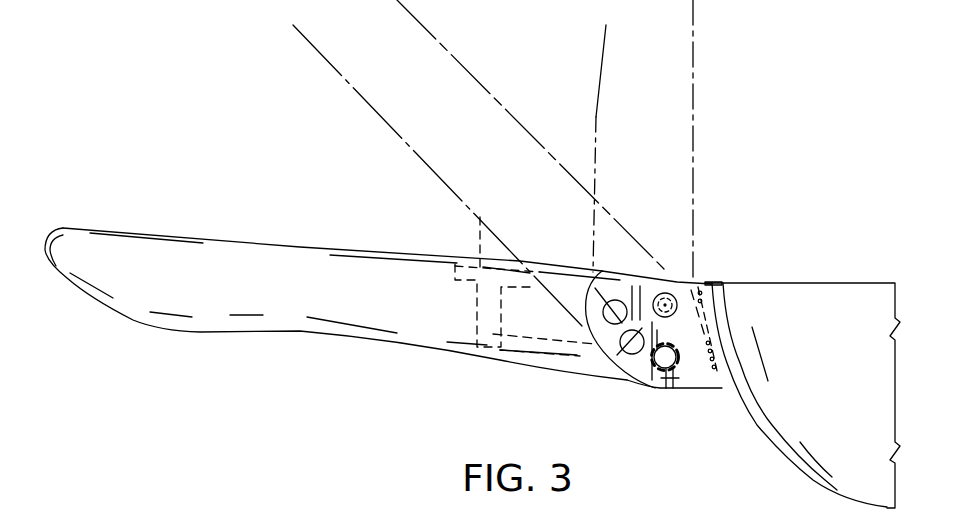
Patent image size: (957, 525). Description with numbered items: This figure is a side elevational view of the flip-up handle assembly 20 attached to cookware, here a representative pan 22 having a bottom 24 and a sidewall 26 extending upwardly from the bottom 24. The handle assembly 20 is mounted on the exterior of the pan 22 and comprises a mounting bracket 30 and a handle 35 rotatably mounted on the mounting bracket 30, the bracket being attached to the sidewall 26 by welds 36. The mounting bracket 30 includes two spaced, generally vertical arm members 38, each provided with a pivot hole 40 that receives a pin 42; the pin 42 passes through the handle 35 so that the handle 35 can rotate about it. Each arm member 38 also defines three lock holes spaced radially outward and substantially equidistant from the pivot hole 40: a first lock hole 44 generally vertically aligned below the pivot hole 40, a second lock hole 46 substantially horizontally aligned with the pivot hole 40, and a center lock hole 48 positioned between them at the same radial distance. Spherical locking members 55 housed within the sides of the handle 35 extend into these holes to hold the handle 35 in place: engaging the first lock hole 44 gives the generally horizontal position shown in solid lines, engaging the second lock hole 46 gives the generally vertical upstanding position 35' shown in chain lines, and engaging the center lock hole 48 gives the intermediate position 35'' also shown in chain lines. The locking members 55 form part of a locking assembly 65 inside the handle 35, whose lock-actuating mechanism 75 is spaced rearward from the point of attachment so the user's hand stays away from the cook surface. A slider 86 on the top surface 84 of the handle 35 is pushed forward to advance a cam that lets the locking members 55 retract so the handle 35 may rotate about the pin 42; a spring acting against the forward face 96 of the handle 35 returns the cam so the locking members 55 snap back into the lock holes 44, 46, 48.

The flip-up handle assembly 20 is at (329, 212).
The pan 22 is at (752, 458).
The bottom 24 is at (887, 503).
The sidewall 26 is at (738, 413).
The mounting bracket 30 is at (646, 401).
The handle 35 is at (336, 271).
The upstanding handle position 35' is at (690, 140).
The intermediate handle position 35'' is at (480, 163).
The welds 36 is at (712, 287).
The arm members 38 is at (627, 299).
The pivot hole 40 is at (668, 283).
The pin 42 is at (677, 308).
The first lock hole 44 is at (676, 356).
The second lock hole 46 is at (595, 288).
The center lock hole 48 is at (617, 355).
The locking members 55 is at (655, 352).
The locking assembly 65 is at (523, 361).
The lock-actuating mechanism 75 is at (459, 249).
The top surface 84 is at (540, 275).
The slider 86 is at (480, 217).
The forward face 96 is at (690, 378).